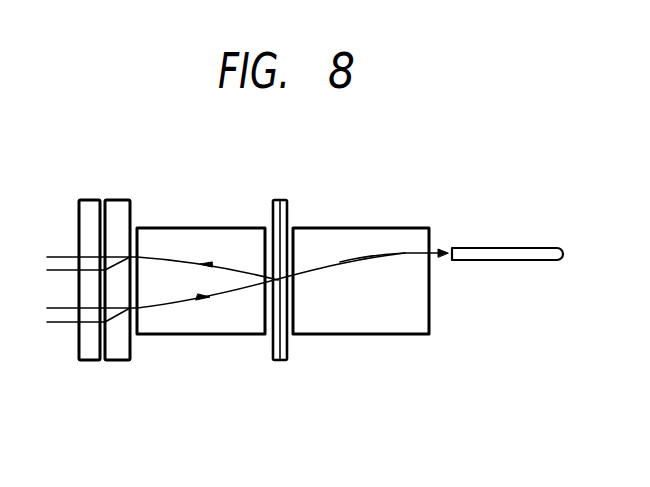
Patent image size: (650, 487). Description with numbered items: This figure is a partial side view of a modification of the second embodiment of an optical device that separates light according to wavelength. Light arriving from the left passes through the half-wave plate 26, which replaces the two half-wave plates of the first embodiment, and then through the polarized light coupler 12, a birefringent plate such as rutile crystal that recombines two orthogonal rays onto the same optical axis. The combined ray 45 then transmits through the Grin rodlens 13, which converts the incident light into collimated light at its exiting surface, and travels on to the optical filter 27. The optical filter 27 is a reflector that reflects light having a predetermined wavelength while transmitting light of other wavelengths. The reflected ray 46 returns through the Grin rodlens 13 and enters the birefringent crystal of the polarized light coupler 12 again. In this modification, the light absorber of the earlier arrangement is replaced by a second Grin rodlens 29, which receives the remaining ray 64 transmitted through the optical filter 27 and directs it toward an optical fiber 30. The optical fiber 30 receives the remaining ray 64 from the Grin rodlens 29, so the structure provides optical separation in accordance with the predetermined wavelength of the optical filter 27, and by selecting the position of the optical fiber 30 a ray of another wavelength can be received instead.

The polarized light coupler 12 is at (121, 200).
The Grin rodlens 13 is at (172, 228).
The half-wave plate 26 is at (88, 200).
The optical filter 27 is at (280, 200).
The Grin rodlens 29 is at (333, 228).
The optical fiber 30 is at (540, 247).
The combined ray 45 is at (173, 307).
The reflected ray 46 is at (227, 266).
The remaining ray 64 is at (403, 253).